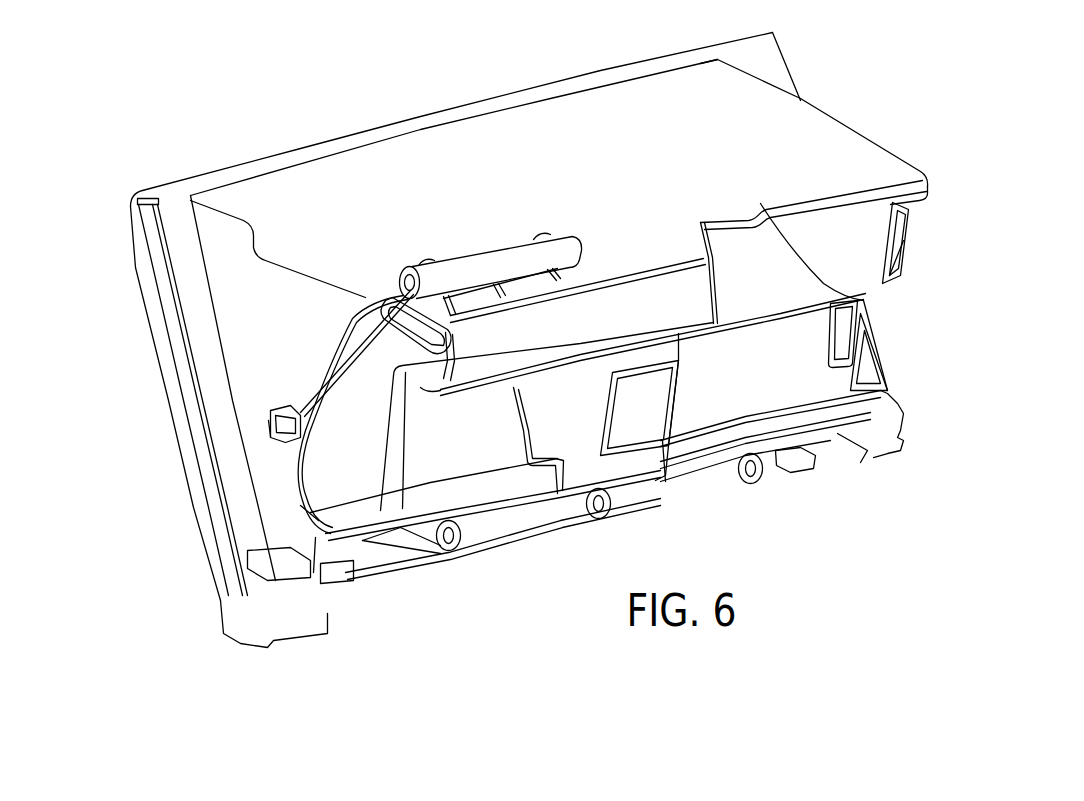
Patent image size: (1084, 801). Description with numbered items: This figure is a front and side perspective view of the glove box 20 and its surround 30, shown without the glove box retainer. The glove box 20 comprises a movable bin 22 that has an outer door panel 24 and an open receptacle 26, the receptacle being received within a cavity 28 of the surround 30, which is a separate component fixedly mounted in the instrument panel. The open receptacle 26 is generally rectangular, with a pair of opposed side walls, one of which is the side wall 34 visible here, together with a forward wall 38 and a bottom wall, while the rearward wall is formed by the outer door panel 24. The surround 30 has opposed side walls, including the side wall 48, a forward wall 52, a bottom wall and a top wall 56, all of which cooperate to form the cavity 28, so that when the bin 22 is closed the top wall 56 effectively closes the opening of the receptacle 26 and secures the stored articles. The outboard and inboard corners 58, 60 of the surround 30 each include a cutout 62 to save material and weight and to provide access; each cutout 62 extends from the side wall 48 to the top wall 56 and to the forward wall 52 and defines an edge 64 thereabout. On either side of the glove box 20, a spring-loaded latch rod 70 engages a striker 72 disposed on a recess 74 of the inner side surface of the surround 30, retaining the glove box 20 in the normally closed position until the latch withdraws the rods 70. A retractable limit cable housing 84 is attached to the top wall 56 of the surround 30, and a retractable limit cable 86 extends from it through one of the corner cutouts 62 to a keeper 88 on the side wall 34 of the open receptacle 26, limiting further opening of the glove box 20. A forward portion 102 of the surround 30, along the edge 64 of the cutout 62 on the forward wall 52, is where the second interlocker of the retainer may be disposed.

The glove box 20 is at (170, 232).
The movable bin 22 is at (366, 553).
The outer door panel 24 is at (170, 200).
The open receptacle 26 is at (427, 327).
The cavity 28 is at (306, 560).
The surround 30 is at (798, 127).
The side wall 34 is at (313, 507).
The forward wall 38 is at (450, 487).
The side wall 48 is at (223, 282).
The forward wall 52 is at (677, 310).
The top wall 56 is at (835, 152).
The outboard corner 58 is at (367, 270).
The inboard corner 60 is at (902, 177).
The cutout 62 is at (250, 560).
The edge 64 is at (897, 284).
The spring-loaded latch rod 70 is at (270, 420).
The striker 72 is at (300, 455).
The recess 74 is at (276, 418).
The retractable limit cable housing 84 is at (508, 255).
The retractable limit cable 86 is at (313, 412).
The keeper 88 is at (317, 440).
The forward portion 102 is at (860, 297).